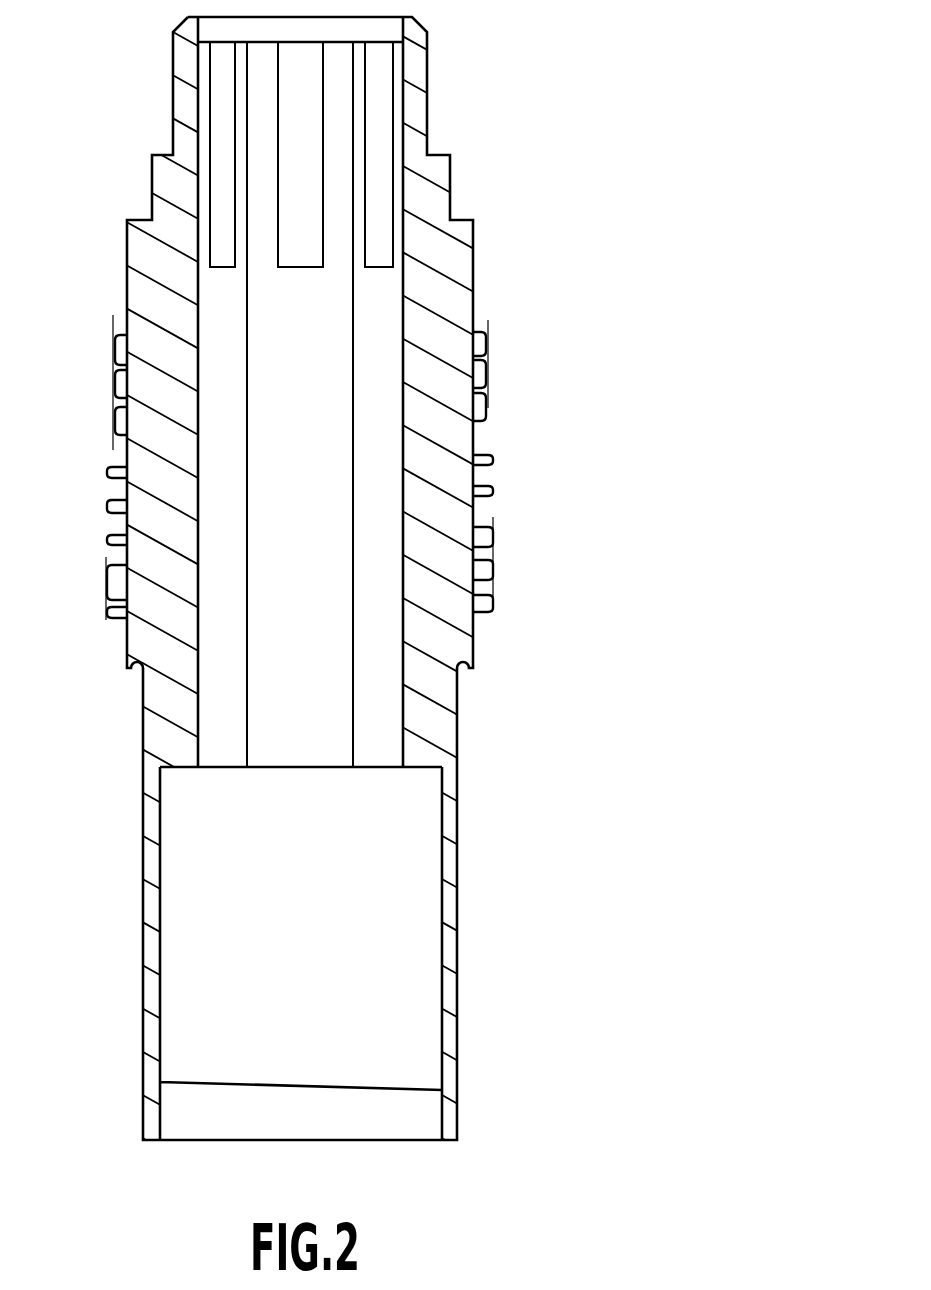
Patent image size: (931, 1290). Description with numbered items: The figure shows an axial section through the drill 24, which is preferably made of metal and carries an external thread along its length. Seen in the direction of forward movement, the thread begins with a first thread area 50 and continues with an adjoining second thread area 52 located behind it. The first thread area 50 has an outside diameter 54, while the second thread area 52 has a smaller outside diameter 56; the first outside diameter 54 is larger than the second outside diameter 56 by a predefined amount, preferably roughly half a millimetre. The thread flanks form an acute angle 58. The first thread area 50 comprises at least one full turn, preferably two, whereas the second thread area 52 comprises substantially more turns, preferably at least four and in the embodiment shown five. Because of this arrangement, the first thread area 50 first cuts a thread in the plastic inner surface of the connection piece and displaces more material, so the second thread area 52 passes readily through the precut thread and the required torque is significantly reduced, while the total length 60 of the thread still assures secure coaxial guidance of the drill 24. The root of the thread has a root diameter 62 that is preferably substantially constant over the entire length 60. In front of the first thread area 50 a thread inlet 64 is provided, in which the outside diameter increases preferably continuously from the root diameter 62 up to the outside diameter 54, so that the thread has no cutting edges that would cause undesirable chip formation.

The drill 24 is at (440, 253).
The first thread area 50 is at (488, 560).
The second thread area 52 is at (478, 425).
The outside diameter of the first thread area 54 is at (112, 587).
The outside diameter of the second thread area 56 is at (486, 327).
The acute angle 58 is at (483, 460).
The total length of the thread 60 is at (29, 333).
The root diameter 62 is at (474, 483).
The thread inlet 64 is at (478, 633).